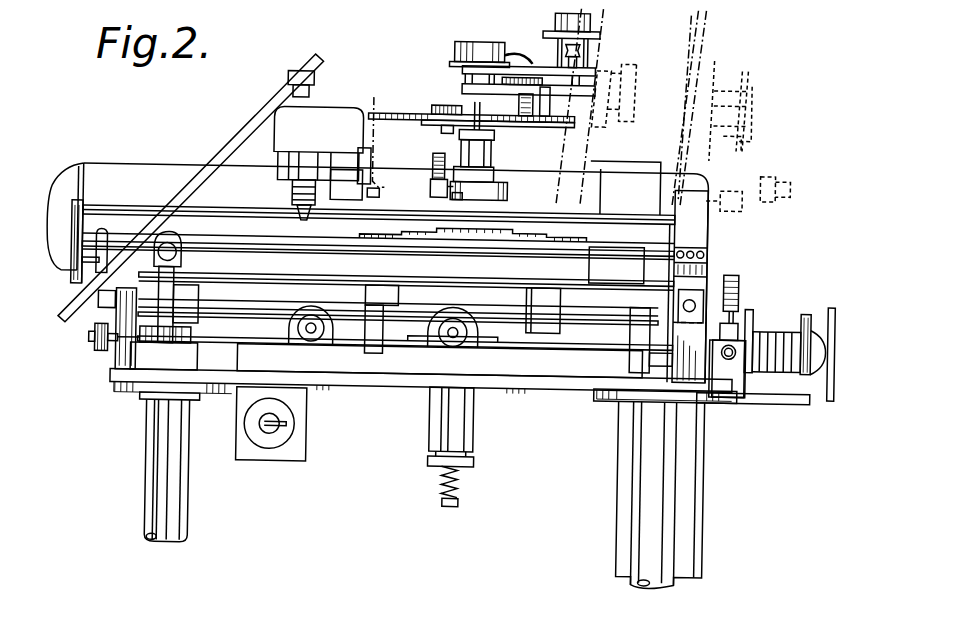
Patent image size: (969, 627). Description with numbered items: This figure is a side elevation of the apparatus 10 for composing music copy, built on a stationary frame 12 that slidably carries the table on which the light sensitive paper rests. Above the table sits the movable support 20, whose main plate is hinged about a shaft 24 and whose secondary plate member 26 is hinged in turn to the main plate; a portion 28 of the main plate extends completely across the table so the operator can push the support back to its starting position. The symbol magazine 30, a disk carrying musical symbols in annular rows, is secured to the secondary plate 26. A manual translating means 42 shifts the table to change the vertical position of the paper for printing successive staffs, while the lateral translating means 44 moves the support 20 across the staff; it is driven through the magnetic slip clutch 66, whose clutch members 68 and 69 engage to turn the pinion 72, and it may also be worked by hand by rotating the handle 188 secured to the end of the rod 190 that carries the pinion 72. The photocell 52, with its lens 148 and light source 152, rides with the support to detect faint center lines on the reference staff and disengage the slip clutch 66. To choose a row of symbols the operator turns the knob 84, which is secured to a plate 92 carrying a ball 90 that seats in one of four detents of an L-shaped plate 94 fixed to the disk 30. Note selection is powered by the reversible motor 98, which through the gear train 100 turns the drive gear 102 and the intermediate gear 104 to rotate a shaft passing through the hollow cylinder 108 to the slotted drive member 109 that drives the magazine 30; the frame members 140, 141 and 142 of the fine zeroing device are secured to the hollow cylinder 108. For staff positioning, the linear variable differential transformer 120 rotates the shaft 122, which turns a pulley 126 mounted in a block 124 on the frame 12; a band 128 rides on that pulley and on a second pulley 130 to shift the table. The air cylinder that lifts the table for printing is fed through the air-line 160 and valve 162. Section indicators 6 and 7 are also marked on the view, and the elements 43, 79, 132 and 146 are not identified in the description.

The apparatus for composing music copy 10 is at (104, 156).
The stationary frame 12 is at (550, 382).
The movable support 20 is at (612, 47).
The shaft 24 is at (703, 290).
The secondary plate member 26 is at (560, 215).
The portion of main plate 28 is at (72, 206).
The symbol magazine 30 is at (378, 233).
The manual translating means 42 is at (84, 243).
The latch pin 43 is at (100, 268).
The lateral translating means 44 is at (742, 298).
The photocell 52 is at (333, 113).
The magnetic slip clutch 66 is at (792, 302).
The clutch member 68 is at (797, 318).
The clutch member 69 is at (760, 325).
The pinion 72 is at (672, 355).
The handle 79 is at (72, 305).
The knob 84 is at (431, 178).
The ball 90 is at (494, 175).
The plate 92 is at (492, 165).
The L-shaped plate 94 is at (508, 189).
The note selection motor 98 is at (556, 13).
The gear train 100 is at (560, 62).
The drive gear 102 is at (540, 99).
The intermediate gear 104 is at (447, 107).
The hollow cylinder 108 is at (436, 150).
The drive member 109 is at (452, 191).
The linear variable differential transformer 120 is at (466, 430).
The shaft 122 is at (455, 337).
The block 124 is at (124, 319).
The pulley 126 is at (466, 312).
The band 128 is at (430, 298).
The second pulley 130 is at (313, 302).
The bracket 132 is at (404, 290).
The frame member 140 is at (466, 70).
The frame member 141 is at (517, 96).
The frame member 142 is at (494, 126).
The rack bar 146 is at (440, 122).
The lens 148 is at (294, 207).
The light source 152 is at (322, 205).
The air-line 160 is at (782, 393).
The valve 162 is at (736, 393).
The handle 188 is at (94, 337).
The rod 190 is at (118, 345).
The section line 6 is at (373, 120).
The section line 7 is at (373, 166).